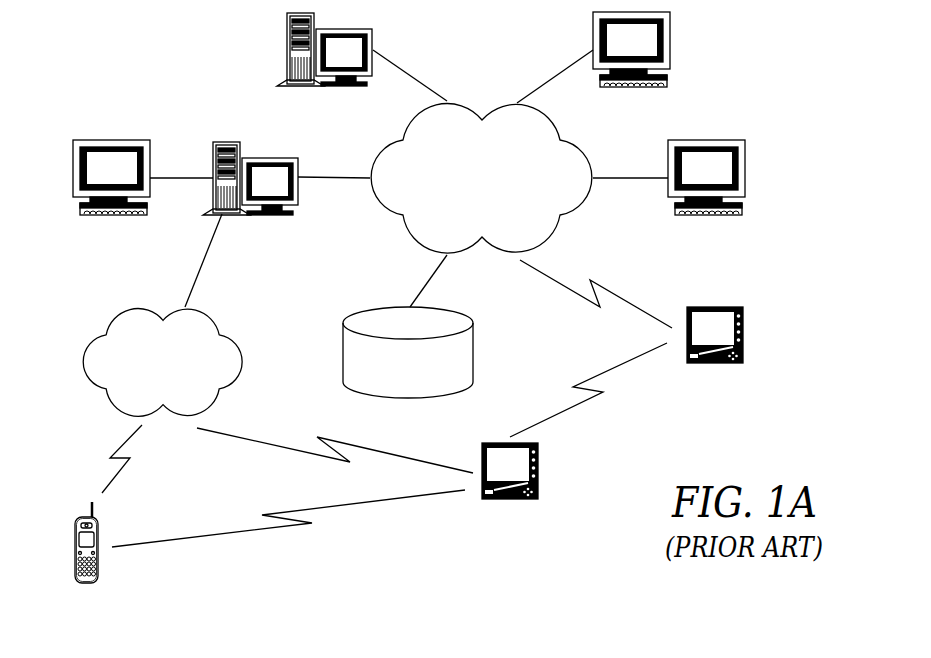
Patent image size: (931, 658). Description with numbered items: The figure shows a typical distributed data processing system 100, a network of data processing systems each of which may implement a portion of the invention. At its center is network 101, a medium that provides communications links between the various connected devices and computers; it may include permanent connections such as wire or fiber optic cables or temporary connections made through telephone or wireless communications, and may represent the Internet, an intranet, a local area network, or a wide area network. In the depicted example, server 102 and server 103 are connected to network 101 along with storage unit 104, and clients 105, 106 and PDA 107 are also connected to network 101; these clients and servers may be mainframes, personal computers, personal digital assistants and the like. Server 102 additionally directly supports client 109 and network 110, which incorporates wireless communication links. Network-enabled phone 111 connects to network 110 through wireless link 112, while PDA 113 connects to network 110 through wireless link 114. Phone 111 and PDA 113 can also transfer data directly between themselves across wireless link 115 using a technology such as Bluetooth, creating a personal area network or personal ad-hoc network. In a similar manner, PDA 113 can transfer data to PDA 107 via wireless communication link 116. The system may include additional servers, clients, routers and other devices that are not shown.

The distributed data processing system 100 is at (145, 66).
The network 101 is at (500, 200).
The server 102 is at (222, 140).
The server 103 is at (287, 53).
The storage unit 104 is at (342, 357).
The client 105 is at (670, 45).
The client 106 is at (745, 177).
The PDA 107 is at (743, 332).
The client 109 is at (110, 140).
The network 110 is at (184, 385).
The network-enabled phone 111 is at (98, 562).
The wireless link 112 is at (125, 477).
The PDA 113 is at (538, 470).
The wireless link 114 is at (248, 436).
The wireless link 115 is at (222, 533).
The wireless communication link 116 is at (563, 407).